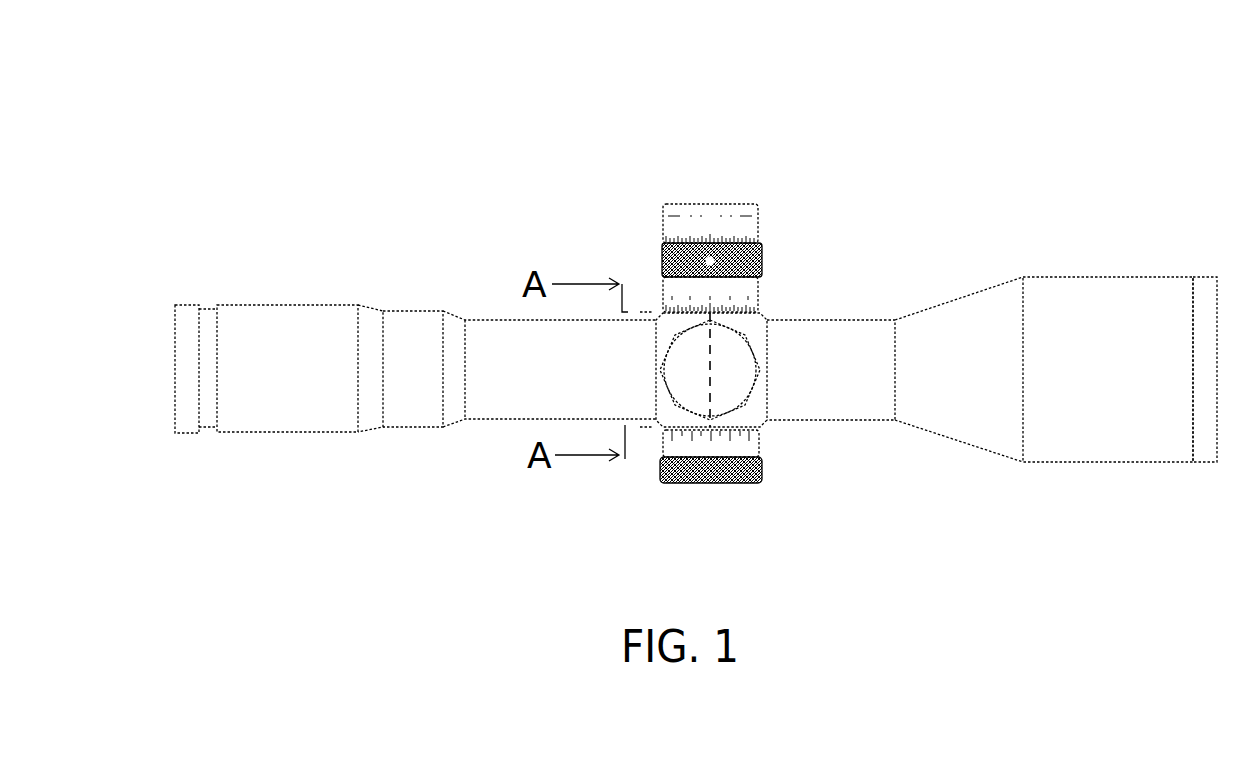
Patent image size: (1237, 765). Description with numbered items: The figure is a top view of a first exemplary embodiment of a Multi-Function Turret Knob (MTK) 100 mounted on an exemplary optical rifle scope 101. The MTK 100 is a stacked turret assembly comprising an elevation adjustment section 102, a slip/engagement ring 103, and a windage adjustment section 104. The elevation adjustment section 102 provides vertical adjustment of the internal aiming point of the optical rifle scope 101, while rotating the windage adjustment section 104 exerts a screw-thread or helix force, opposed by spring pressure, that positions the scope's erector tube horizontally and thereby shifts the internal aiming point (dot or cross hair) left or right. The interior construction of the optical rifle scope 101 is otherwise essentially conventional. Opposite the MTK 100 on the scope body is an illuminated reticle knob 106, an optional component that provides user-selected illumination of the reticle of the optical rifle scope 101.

The Multi-Function Turret Knob (MTK) 100 is at (708, 204).
The optical rifle scope 101 is at (975, 333).
The elevation adjustment section 102 is at (663, 288).
The slip/engagement ring 103 is at (662, 253).
The windage adjustment section 104 is at (663, 214).
The illuminated reticle knob 106 is at (663, 470).